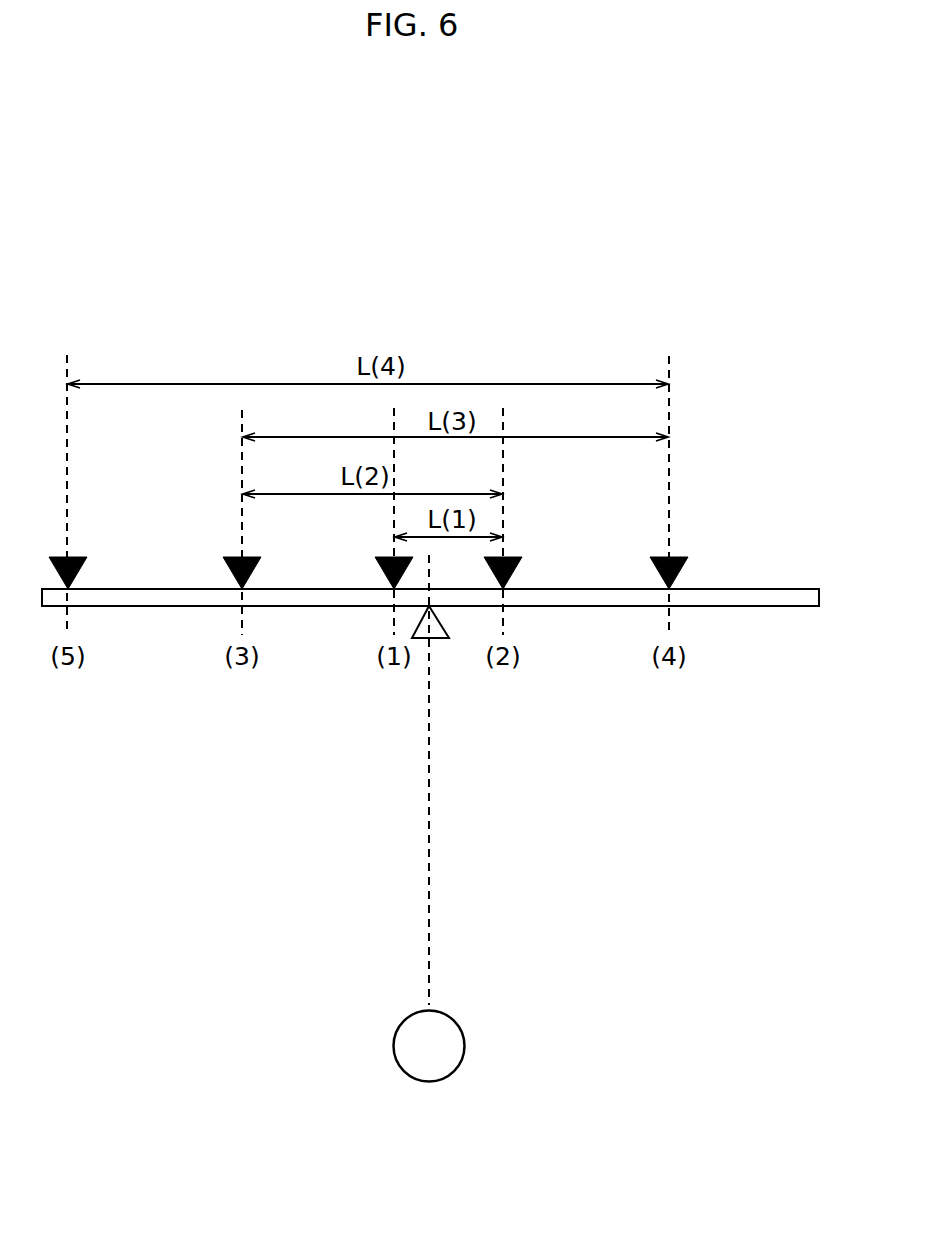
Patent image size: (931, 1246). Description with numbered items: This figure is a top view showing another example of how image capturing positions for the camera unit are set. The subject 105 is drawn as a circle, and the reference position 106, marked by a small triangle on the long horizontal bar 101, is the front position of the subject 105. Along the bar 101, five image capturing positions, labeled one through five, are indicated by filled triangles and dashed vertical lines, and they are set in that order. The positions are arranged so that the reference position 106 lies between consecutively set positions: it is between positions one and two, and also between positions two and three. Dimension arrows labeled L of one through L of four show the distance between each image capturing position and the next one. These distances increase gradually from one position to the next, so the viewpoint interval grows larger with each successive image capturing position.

The lever / weighing bar 101 is at (754, 597).
The subject 105 is at (443, 1042).
The reference position 106 is at (432, 607).